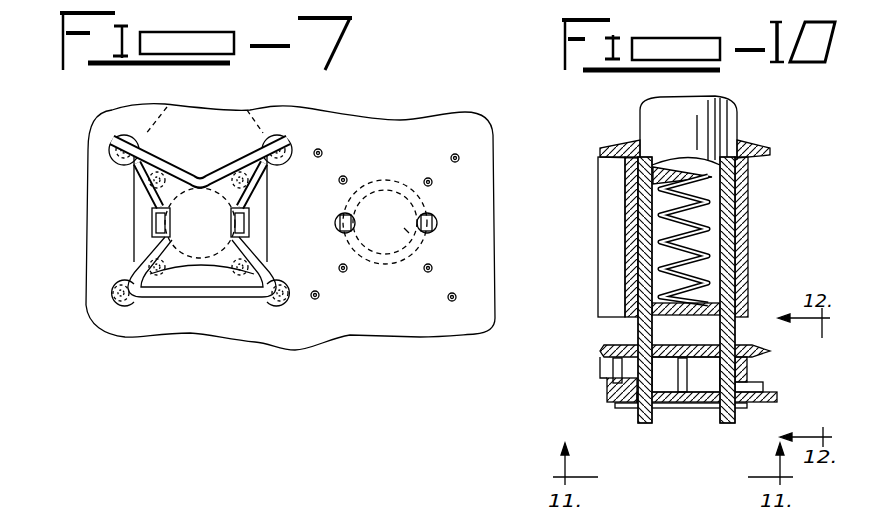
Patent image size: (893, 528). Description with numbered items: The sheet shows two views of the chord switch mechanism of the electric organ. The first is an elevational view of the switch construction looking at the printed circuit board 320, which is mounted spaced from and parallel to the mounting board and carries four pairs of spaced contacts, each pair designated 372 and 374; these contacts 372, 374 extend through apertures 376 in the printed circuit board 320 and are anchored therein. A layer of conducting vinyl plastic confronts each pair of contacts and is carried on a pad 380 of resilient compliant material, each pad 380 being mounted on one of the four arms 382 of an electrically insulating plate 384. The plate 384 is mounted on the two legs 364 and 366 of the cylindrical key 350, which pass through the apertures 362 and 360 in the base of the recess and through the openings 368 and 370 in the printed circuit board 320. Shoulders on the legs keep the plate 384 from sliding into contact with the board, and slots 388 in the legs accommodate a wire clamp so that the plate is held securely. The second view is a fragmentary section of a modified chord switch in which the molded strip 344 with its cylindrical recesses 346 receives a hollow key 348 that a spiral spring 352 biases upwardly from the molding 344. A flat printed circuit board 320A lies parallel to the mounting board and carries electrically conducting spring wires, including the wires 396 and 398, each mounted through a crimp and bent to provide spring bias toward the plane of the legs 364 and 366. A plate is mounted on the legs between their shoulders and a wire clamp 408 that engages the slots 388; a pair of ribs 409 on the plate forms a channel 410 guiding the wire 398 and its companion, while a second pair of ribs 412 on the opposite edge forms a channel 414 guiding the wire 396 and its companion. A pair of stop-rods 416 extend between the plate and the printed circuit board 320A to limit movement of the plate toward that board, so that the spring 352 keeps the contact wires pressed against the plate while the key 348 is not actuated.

In FIG. 7, the printed circuit board 320 is at (110, 186).
In FIG. 7, the pad 380 is at (110, 163).
In FIG. 7, the arms 382 is at (262, 160).
In FIG. 7, the electrically insulating plate 384 is at (206, 192).
In FIG. 7, the leg 364 is at (152, 223).
In FIG. 7, the leg 366 is at (252, 216).
In FIG. 7, the contact 372 is at (247, 108).
In FIG. 7, the apertures 376 is at (427, 178).
In FIG. 7, the contact 374 is at (340, 266).
In FIG. 7, the aperture 360 is at (336, 224).
In FIG. 7, the aperture 362 is at (437, 224).
In FIG. 7, the cylindrical key 350 is at (432, 201).
In FIG. 7, the opening 368 is at (385, 222).
In FIG. 7, the opening 370 is at (388, 237).
In FIG. 10, the chord switch key 348 is at (655, 127).
In FIG. 10, the strip 344 is at (768, 150).
In FIG. 10, the cylindrical recess 346 is at (640, 166).
In FIG. 10, the spiral spring 352 is at (712, 178).
In FIG. 10, the slots 388 is at (652, 419).
In FIG. 10, the stop-rods 416 is at (686, 356).
In FIG. 10, the flat printed circuit board 320A is at (602, 350).
In FIG. 10, the channel 414 is at (615, 378).
In FIG. 10, the spring wire 396 is at (617, 364).
In FIG. 10, the ribs 412 is at (616, 395).
In FIG. 10, the spring wire 398 is at (750, 362).
In FIG. 10, the ribs 409 is at (762, 384).
In FIG. 10, the channel 410 is at (765, 397).
In FIG. 10, the wire clamp 408 is at (750, 408).